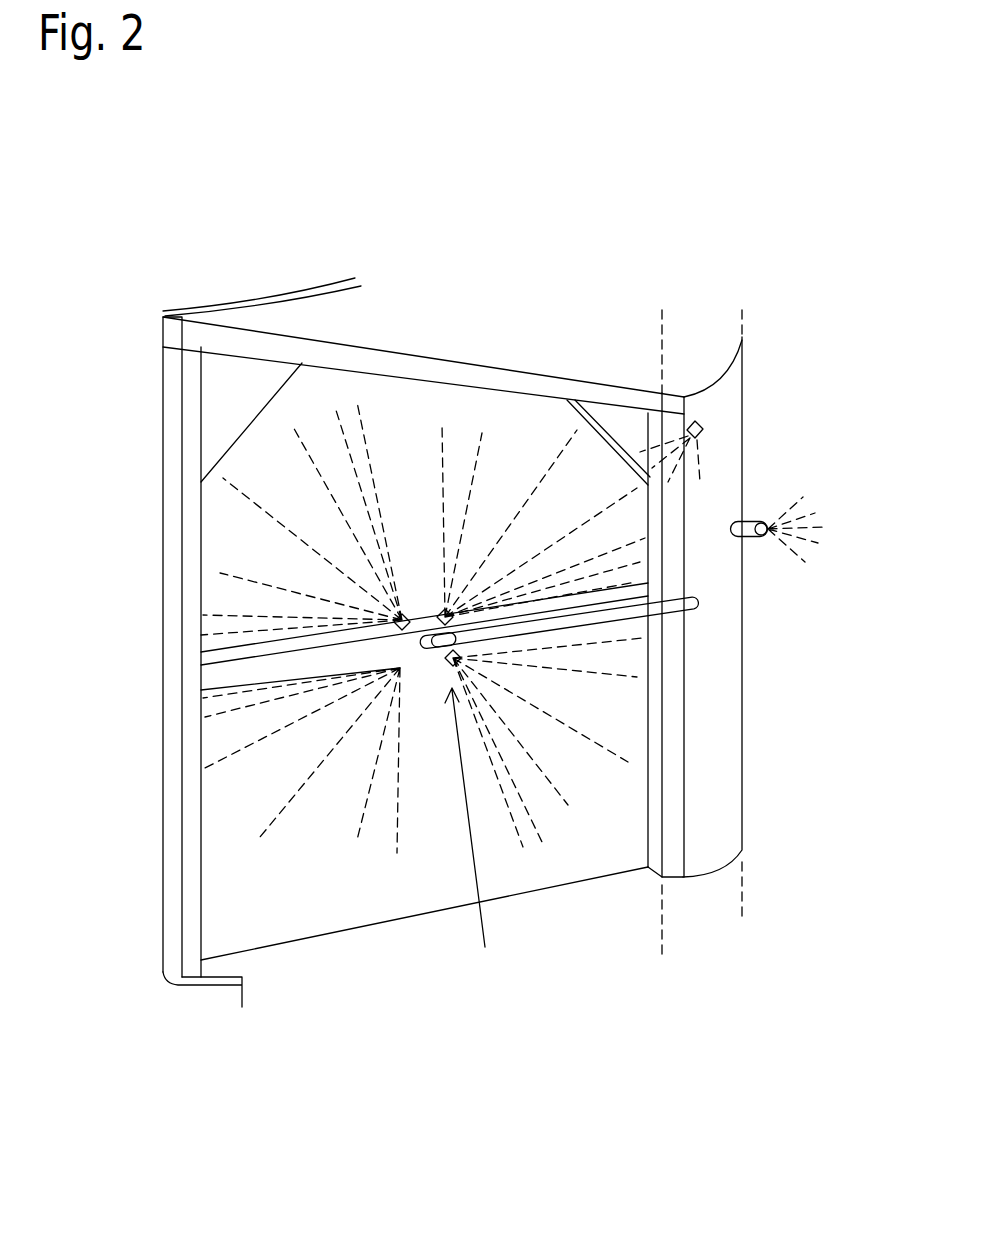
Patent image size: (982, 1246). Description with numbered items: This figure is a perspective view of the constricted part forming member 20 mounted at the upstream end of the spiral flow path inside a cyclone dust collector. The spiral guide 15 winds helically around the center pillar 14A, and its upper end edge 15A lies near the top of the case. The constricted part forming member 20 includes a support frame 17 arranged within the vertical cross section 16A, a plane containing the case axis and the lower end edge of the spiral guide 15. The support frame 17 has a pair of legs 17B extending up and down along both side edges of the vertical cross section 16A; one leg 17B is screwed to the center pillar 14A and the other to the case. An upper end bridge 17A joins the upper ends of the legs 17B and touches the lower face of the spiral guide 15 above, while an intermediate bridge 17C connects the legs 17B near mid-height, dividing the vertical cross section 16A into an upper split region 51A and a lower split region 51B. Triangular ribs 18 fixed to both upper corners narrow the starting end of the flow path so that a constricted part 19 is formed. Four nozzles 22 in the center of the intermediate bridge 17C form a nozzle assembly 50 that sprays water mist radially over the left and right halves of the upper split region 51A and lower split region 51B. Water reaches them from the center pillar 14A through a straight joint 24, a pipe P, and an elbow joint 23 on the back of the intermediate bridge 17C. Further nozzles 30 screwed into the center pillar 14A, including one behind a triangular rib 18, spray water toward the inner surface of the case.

The center pillar 14A is at (730, 767).
The spiral guide 15 is at (205, 987).
The upper end edge 15A is at (352, 928).
The vertical cross section 16A is at (570, 868).
The support frame 17 is at (160, 801).
The upper end bridge 17A is at (405, 378).
The legs 17B is at (190, 858).
The intermediate bridge 17C is at (307, 665).
The triangular ribs 18 is at (262, 393).
The constricted part 19 is at (228, 550).
The constricted part forming member 20 is at (143, 431).
The nozzles 22 is at (445, 608).
The elbow joint 23 is at (470, 662).
The straight joint 24 is at (700, 605).
The nozzles 30 is at (757, 522).
The nozzle assembly 50 is at (473, 835).
The upper split region 51A is at (215, 635).
The lower split region 51B is at (215, 733).
The pipe P is at (578, 626).